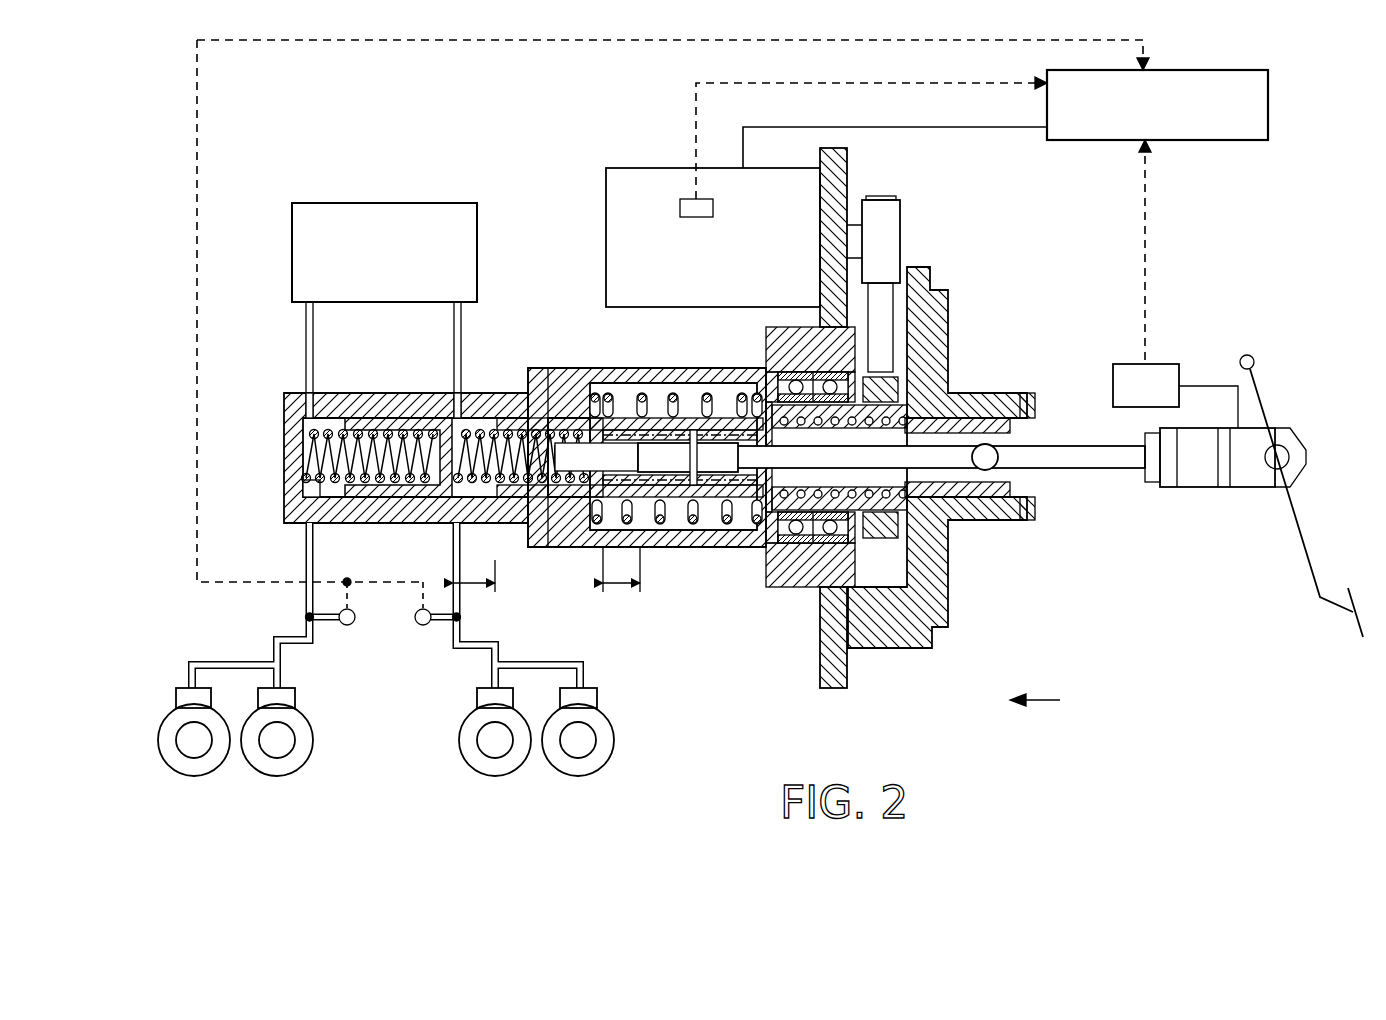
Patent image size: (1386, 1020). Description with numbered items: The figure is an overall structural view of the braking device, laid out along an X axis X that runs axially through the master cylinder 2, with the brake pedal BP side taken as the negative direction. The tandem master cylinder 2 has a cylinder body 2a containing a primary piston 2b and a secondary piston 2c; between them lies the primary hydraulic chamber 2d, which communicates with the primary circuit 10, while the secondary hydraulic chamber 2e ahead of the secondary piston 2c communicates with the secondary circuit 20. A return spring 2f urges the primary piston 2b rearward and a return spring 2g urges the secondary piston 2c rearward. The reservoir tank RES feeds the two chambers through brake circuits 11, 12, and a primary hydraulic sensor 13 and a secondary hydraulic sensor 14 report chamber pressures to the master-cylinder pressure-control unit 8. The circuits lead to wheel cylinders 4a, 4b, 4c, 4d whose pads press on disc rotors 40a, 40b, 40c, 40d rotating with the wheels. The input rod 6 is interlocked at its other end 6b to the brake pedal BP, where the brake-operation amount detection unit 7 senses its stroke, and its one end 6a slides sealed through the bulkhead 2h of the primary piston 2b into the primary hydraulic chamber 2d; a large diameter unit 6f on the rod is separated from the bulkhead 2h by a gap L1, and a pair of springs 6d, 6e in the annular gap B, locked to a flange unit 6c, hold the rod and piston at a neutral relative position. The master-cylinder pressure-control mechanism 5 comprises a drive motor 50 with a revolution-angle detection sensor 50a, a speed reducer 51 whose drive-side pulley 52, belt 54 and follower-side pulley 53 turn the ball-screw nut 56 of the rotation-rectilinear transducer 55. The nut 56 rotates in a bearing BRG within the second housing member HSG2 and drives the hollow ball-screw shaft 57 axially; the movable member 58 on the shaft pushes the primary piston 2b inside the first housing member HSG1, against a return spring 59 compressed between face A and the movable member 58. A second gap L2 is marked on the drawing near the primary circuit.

The master cylinder 2 is at (356, 393).
The cylinder body 2a is at (290, 430).
The primary piston 2b is at (545, 425).
The secondary piston 2c is at (400, 430).
The primary hydraulic chamber 2d is at (455, 425).
The secondary hydraulic chamber 2e is at (305, 488).
The return spring 2f is at (495, 425).
The return spring 2g is at (325, 430).
The bulkhead 2h is at (585, 425).
The master-cylinder pressure-control mechanism 5 is at (922, 355).
The input rod 6 is at (846, 465).
The one end of the input rod 6a is at (562, 475).
The other end of the input rod 6b is at (1122, 470).
The flange unit 6c is at (720, 530).
The spring 6d is at (626, 430).
The spring 6e is at (718, 430).
The large diameter unit 6f is at (655, 450).
The brake-operation amount detection unit 7 is at (1165, 364).
The master-cylinder pressure-control unit 8 is at (1213, 140).
The primary circuit 10 is at (462, 600).
The brake circuit 11 is at (462, 330).
The brake circuit 12 is at (306, 322).
The primary hydraulic sensor 13 is at (423, 626).
The secondary hydraulic sensor 14 is at (347, 626).
The secondary circuit 20 is at (306, 556).
The wheel cylinder 4a is at (477, 698).
The wheel cylinder 4b is at (295, 698).
The wheel cylinder 4c is at (176, 698).
The wheel cylinder 4d is at (597, 698).
The disc rotor 40a is at (460, 750).
The disc rotor 40b is at (312, 750).
The disc rotor 40c is at (160, 750).
The disc rotor 40d is at (614, 738).
The drive motor 50 is at (620, 168).
The revolution-angle detection sensor 50a is at (695, 217).
The speed reducer 51 is at (905, 215).
The drive-side pulley 52 is at (902, 268).
The follower-side pulley 53 is at (940, 532).
The belt 54 is at (893, 340).
The rotation-rectilinear transducer 55 is at (862, 640).
The ball-screw nut 56 is at (905, 405).
The ball-screw shaft 57 is at (1000, 425).
The movable member 58 is at (750, 588).
The return spring 59 is at (682, 400).
The reservoir tank RES is at (312, 203).
The first housing member HSG1 is at (662, 548).
The second housing member HSG2 is at (892, 645).
The bearing BRG is at (800, 545).
The brake pedal BP is at (1310, 578).
The face A is at (592, 548).
The annular gap B is at (672, 500).
The gap L1 is at (621, 570).
The length L2 is at (474, 574).
The X axis X is at (1035, 711).